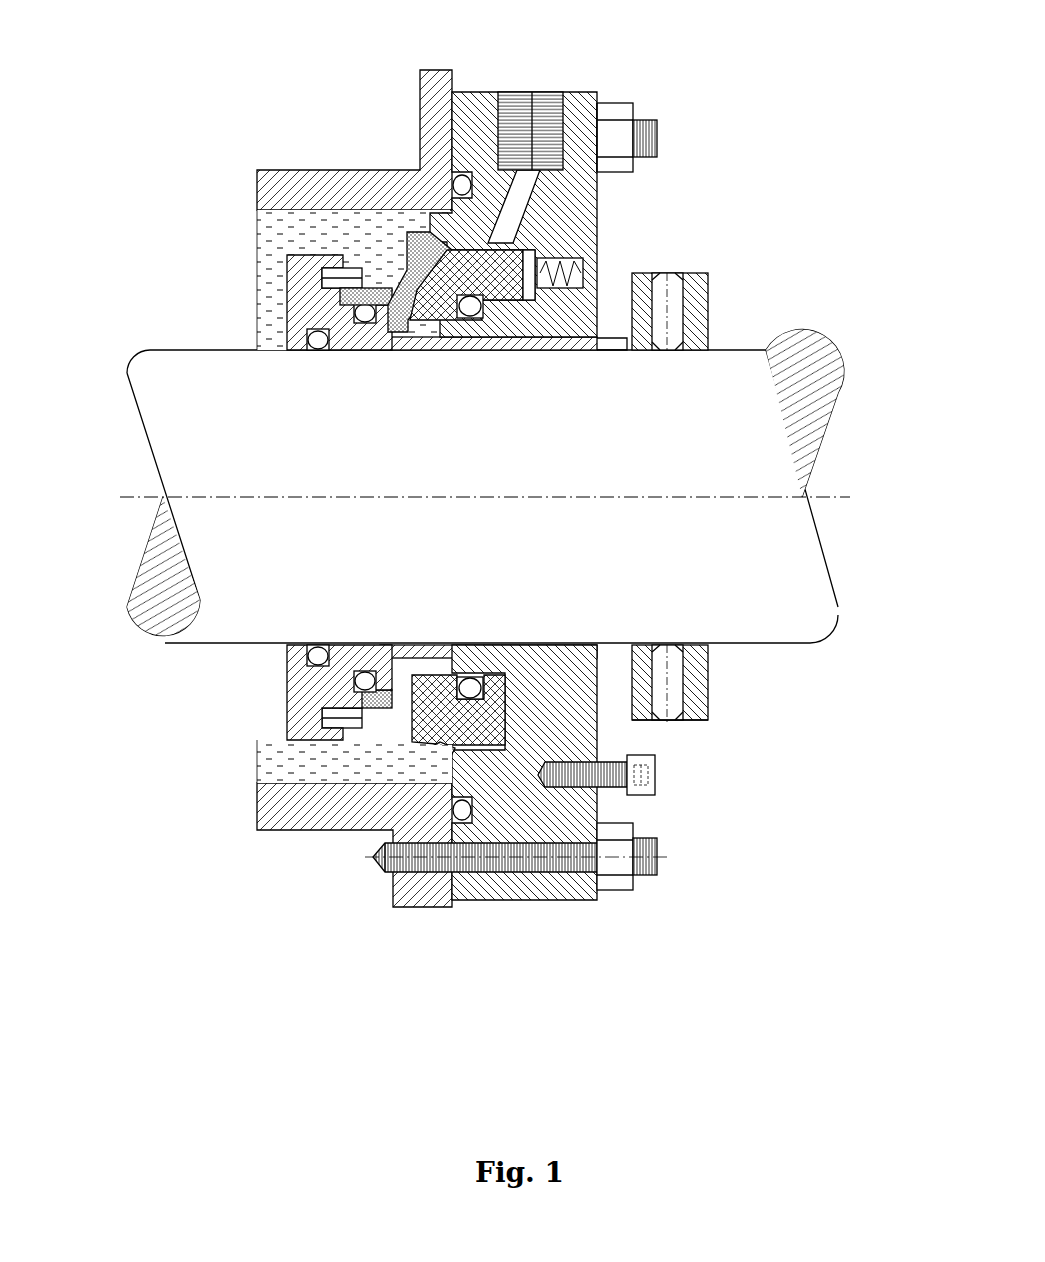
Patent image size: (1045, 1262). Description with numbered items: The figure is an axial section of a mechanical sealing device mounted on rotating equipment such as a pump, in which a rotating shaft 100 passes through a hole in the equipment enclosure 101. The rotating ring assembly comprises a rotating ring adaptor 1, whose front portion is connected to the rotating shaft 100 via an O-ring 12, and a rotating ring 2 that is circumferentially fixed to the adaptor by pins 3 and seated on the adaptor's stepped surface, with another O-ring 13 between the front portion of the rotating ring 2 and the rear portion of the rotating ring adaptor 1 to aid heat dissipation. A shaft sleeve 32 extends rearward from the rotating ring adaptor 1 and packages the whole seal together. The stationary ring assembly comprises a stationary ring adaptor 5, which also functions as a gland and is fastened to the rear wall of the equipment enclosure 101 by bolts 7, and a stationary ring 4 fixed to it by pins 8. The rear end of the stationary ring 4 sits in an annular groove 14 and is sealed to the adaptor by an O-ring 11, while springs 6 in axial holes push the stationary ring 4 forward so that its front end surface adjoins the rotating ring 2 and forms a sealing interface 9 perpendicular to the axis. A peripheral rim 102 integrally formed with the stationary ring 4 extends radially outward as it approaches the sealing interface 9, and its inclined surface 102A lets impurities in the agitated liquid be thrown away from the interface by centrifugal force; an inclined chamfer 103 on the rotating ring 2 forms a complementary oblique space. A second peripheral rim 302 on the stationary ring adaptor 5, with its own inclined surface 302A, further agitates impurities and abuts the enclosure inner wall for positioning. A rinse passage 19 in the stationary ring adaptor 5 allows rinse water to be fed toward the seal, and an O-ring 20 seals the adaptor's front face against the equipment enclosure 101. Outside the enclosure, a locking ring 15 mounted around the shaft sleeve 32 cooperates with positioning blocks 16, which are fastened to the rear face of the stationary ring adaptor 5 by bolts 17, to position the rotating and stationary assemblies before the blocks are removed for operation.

The rotating shaft 100 is at (817, 405).
The equipment enclosure 101 is at (308, 165).
The peripheral rim 102 is at (407, 235).
The inclined surface 102A is at (430, 730).
The inclined chamfer 103 is at (385, 715).
The rotating ring adaptor 1 is at (288, 342).
The rotating ring 2 is at (365, 262).
The pins 3 is at (288, 740).
The stationary ring 4 is at (440, 222).
The stationary ring adaptor 5 is at (597, 208).
The springs 6 is at (597, 268).
The bolts 7 is at (633, 105).
The pins 8 is at (630, 723).
The sealing interface 9 is at (362, 278).
The O-ring 11 is at (470, 698).
The O-ring 12 is at (318, 657).
The O-ring 13 is at (368, 692).
The annular groove 14 is at (527, 290).
The locking ring 15 is at (708, 672).
The positioning blocks 16 is at (540, 735).
The bolts 17 is at (652, 797).
The rinse passage 19 is at (478, 260).
The O-ring 20 is at (542, 740).
The shaft sleeve 32 is at (707, 720).
The peripheral rim 302 is at (470, 823).
The inclined surface 302A is at (437, 230).